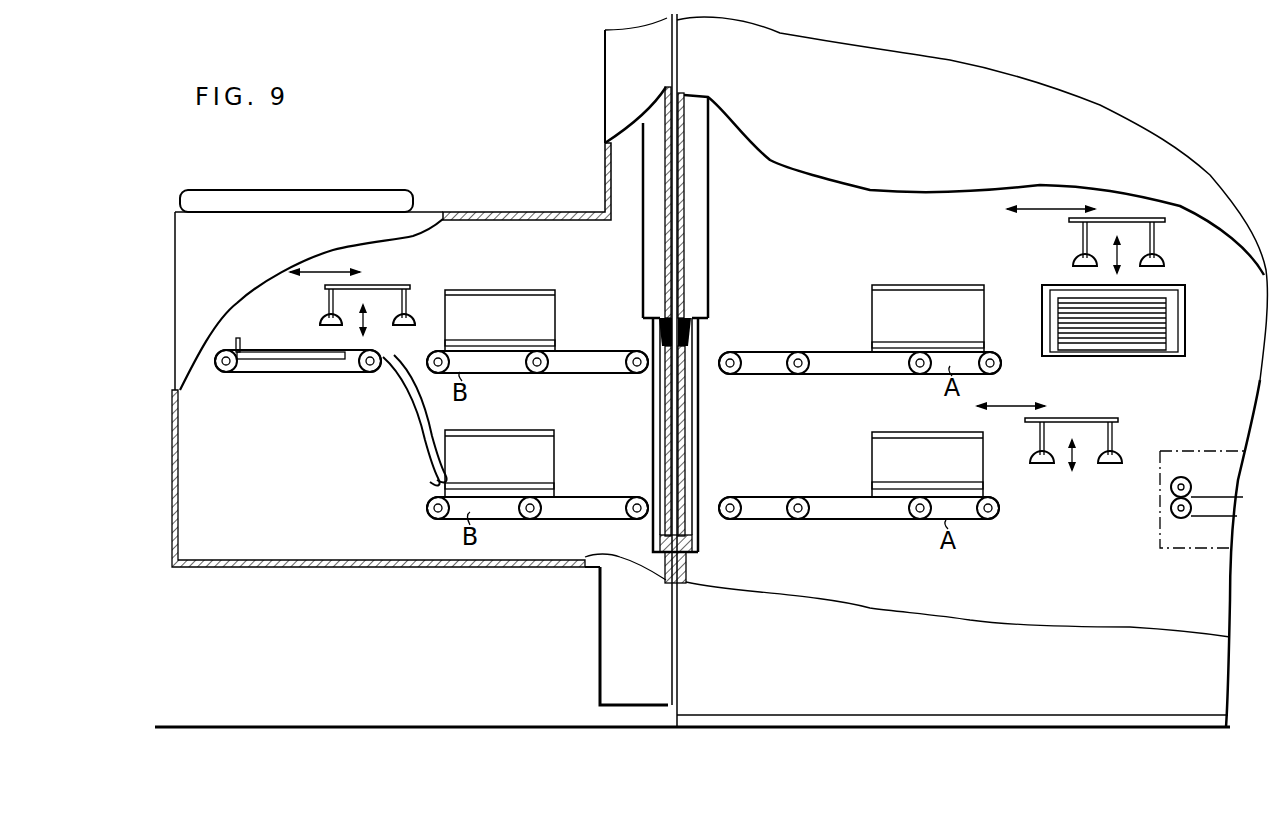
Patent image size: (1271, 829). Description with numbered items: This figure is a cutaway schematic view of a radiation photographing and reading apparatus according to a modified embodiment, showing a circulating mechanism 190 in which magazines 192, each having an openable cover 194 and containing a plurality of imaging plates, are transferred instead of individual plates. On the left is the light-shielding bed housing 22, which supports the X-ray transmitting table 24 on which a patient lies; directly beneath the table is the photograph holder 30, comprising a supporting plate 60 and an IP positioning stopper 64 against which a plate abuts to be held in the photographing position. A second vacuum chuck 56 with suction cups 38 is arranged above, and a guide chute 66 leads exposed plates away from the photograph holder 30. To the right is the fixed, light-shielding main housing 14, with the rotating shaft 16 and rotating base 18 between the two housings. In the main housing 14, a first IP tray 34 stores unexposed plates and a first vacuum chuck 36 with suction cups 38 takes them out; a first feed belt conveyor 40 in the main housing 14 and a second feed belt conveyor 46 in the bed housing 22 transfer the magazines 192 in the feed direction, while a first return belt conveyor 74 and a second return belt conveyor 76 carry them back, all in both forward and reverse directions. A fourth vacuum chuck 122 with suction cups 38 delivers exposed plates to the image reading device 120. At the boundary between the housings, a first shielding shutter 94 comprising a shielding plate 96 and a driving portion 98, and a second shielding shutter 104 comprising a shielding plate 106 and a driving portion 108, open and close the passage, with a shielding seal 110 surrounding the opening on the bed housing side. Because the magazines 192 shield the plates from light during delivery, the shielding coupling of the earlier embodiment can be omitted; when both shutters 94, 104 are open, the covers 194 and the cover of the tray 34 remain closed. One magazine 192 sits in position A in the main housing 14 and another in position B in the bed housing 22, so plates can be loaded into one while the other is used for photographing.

The main housing 14 is at (998, 78).
The rotating shaft 16 is at (680, 52).
The rotating base 18 is at (611, 82).
The bed housing 22 is at (517, 211).
The X-ray transmitting table 24 is at (350, 195).
The photograph holder 30 is at (281, 384).
The first IP tray 34 is at (1186, 320).
The first vacuum chuck 36 is at (1120, 217).
The suction cups 38 is at (325, 322).
The first feed belt conveyor 40 is at (838, 375).
The second feed belt conveyor 46 is at (498, 373).
The second vacuum chuck 56 is at (398, 285).
The supporting plate 60 is at (294, 352).
The IP positioning stopper 64 is at (240, 340).
The guide chute 66 is at (408, 416).
The first return belt conveyor 74 is at (572, 519).
The second return belt conveyor 76 is at (843, 521).
The first shielding shutter 94 is at (710, 243).
The shielding plate 96 is at (700, 427).
The driving portion 98 is at (710, 188).
The second shielding shutter 104 is at (636, 309).
The shielding plate 106 is at (652, 405).
The driving portion 108 is at (644, 244).
The shielding seal 110 is at (653, 338).
The image reading device 120 is at (1202, 450).
The fourth vacuum chuck 122 is at (1083, 418).
The circulating mechanism 190 is at (838, 273).
The magazines 192 is at (556, 350).
The openable cover 194 is at (502, 290).